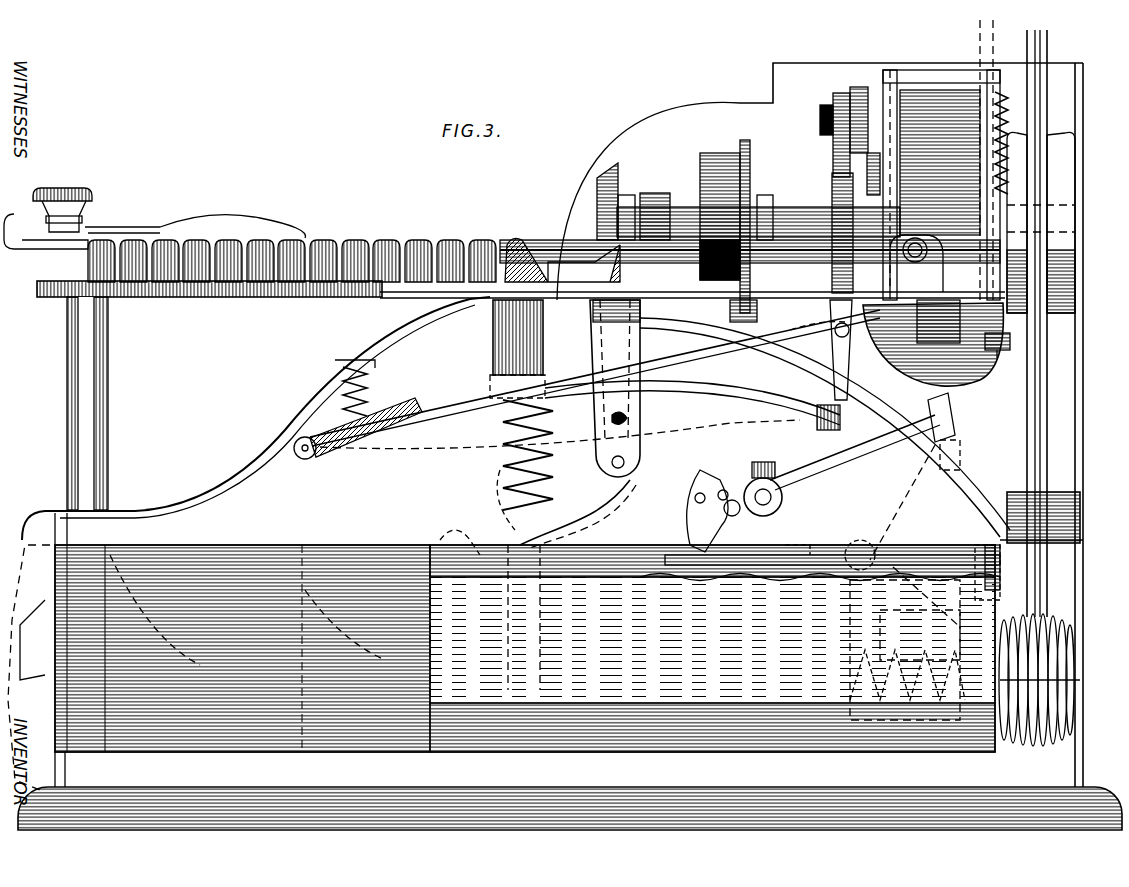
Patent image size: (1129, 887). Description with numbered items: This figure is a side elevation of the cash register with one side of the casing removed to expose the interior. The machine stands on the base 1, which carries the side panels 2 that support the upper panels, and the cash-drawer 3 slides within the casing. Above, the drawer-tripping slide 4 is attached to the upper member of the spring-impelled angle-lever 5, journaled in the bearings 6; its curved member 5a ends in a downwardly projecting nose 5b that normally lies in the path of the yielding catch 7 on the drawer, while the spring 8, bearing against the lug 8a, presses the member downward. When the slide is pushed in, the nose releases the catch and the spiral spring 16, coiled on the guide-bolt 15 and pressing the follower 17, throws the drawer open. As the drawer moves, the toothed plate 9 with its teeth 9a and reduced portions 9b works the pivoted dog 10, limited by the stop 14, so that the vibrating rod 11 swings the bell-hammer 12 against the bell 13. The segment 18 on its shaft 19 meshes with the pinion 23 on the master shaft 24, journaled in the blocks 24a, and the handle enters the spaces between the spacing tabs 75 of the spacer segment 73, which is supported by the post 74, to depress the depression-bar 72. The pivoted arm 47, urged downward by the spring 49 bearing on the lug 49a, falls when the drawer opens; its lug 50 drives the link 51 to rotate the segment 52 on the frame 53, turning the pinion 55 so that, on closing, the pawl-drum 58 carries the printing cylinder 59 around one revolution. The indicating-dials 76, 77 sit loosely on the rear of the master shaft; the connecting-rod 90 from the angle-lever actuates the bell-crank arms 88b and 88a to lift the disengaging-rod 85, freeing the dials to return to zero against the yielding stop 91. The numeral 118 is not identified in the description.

The base 1 is at (548, 828).
The side-walls or panels 2 is at (552, 403).
The cash-drawer 3 is at (501, 617).
The drawer-tripping slide 4 is at (64, 250).
The spring-impelled angle-lever 5 is at (590, 330).
The member of angle-lever 5a is at (577, 513).
The nose 5b is at (520, 560).
The bearings 6 is at (626, 420).
The yielding catch 7 is at (466, 545).
The spring 8 is at (512, 465).
The lug 8a is at (493, 340).
The toothed plate 9 is at (750, 560).
The teeth or lugs 9a is at (790, 542).
The abrupt shoulders or reduced portions 9b is at (863, 543).
The pivoted dog 10 is at (745, 510).
The vibrating rod 11 is at (815, 472).
The bell-hammer 12 is at (957, 415).
The bell 13 is at (933, 345).
The stop 14 is at (763, 516).
The guide-bolt 15 is at (1027, 713).
The spiral spring 16 is at (1017, 640).
The follower 17 is at (997, 697).
The segment 18 is at (588, 305).
The shaft 19 is at (490, 378).
The pinion 23 is at (598, 182).
The master shaft 24 is at (772, 218).
The bearing blocks 24a is at (655, 193).
The arm 47 is at (450, 423).
The spring 49 is at (368, 390).
The lug 49a is at (367, 353).
The lug or projection 50 is at (827, 363).
The rod or link 51 is at (830, 310).
The segment 52 is at (832, 160).
The frame 53 is at (893, 68).
The pinion 55 is at (833, 100).
The pawl-drum 58 is at (858, 92).
The cylinder or roll 59 is at (954, 162).
The depression-rod or bar 72 is at (545, 248).
The spacer segment 73 is at (185, 298).
The post 74 is at (110, 432).
The spacing projections or tabs 75 is at (352, 240).
The indicating-dial 76 is at (1023, 420).
The indicating-dial 77 is at (1045, 427).
The disengaging-rod 85 is at (1010, 340).
The arm of bell-crank lever 88a is at (1000, 350).
The arm of bell-crank lever 88b is at (830, 428).
The connecting-rod 90 is at (733, 403).
The yielding stop 91 is at (1080, 537).
The spring box 118 is at (997, 563).